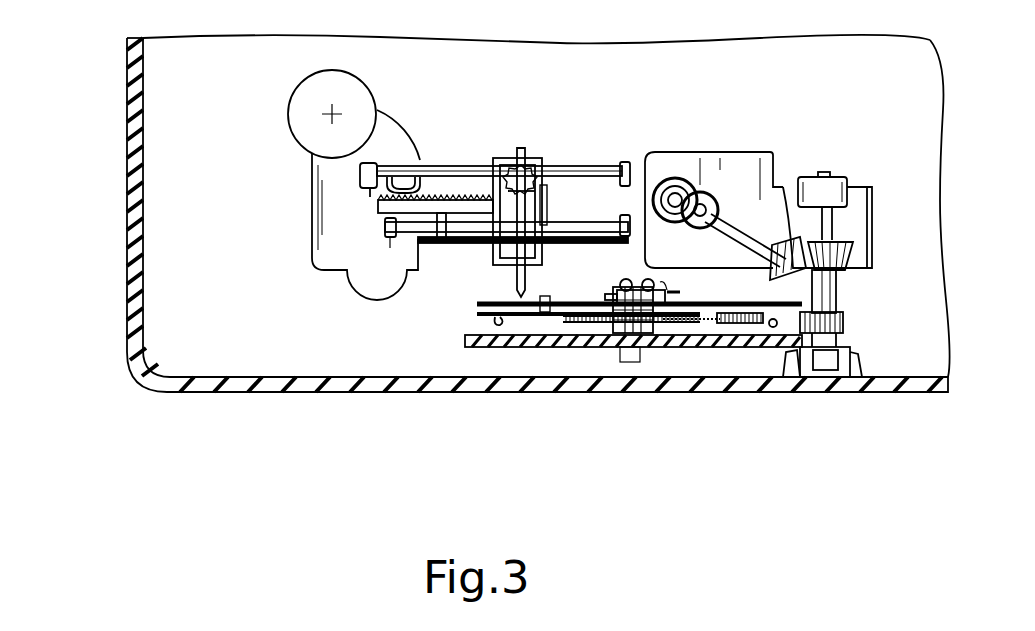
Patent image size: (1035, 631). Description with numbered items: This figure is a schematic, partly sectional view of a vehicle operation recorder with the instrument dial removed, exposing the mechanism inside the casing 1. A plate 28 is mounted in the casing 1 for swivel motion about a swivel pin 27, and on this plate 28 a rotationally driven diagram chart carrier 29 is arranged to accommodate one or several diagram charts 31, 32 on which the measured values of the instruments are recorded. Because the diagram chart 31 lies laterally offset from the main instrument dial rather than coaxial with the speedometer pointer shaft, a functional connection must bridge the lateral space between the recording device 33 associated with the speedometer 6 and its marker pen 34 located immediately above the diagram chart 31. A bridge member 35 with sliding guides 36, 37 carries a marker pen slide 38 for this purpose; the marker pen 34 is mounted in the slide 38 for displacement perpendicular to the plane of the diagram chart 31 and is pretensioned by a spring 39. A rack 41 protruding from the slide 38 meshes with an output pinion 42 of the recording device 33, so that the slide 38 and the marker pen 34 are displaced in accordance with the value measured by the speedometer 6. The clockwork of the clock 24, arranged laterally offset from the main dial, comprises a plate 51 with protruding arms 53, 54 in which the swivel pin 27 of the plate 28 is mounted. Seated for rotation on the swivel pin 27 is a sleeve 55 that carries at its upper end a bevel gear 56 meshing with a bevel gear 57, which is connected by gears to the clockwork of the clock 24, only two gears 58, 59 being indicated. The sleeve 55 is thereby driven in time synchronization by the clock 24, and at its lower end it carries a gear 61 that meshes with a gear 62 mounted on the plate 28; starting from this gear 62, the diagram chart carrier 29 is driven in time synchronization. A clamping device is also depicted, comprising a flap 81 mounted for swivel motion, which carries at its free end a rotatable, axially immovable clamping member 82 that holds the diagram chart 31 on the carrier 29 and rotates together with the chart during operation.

The casing 1 is at (540, 387).
The speedometer 6 is at (306, 198).
The clockwork of the clock 24 is at (658, 142).
The swivel pin 27 is at (835, 222).
The plate 28 is at (677, 340).
The diagram chart carrier 29 is at (633, 337).
The diagram chart 31 is at (560, 300).
The diagram chart 32 is at (477, 313).
The recording device 33 is at (392, 137).
The marker pen 34 is at (520, 150).
The bridge member 35 is at (458, 158).
The sliding guide 36 is at (594, 160).
The sliding guide 37 is at (460, 237).
The marker pen slide 38 is at (493, 255).
The spring 39 is at (548, 165).
The rack 41 is at (390, 208).
The output pinion 42 is at (387, 187).
The plate 51 is at (723, 160).
The arm 53 is at (838, 170).
The arm 54 is at (830, 355).
The sleeve 55 is at (838, 288).
The bevel gear 56 is at (855, 252).
The bevel gear 57 is at (790, 177).
The gear 58 is at (680, 177).
The gear 59 is at (717, 198).
The gear 61 is at (843, 322).
The gear 62 is at (777, 330).
The flap 81 is at (668, 289).
The clamping member 82 is at (637, 287).